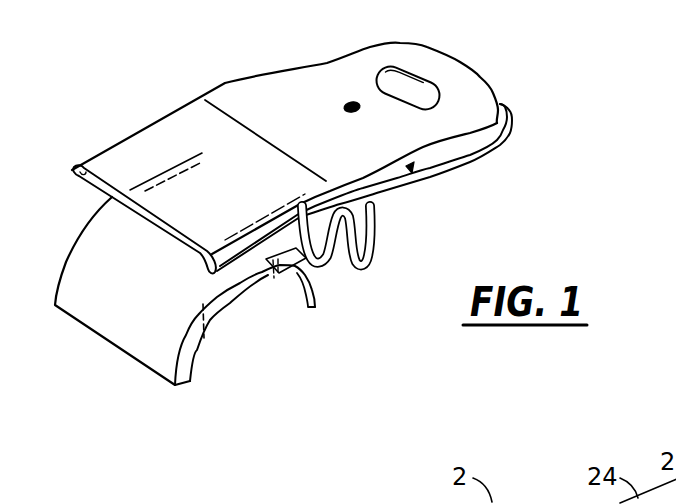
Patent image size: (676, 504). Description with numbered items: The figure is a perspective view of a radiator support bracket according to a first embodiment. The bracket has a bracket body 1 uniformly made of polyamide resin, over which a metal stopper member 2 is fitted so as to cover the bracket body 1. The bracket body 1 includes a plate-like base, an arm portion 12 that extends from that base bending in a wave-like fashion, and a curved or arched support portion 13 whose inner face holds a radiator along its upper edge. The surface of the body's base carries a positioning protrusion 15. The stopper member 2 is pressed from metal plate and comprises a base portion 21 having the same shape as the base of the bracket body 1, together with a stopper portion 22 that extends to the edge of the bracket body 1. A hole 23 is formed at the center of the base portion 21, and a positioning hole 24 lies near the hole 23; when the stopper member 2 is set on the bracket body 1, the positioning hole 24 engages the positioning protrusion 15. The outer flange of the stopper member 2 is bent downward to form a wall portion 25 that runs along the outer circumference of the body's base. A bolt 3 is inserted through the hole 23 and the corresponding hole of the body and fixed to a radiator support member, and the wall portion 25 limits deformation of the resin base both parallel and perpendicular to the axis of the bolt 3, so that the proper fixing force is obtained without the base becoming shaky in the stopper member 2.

The bracket body 1 is at (364, 249).
The stopper member 2 is at (222, 82).
The bolt 3 is at (340, 43).
The arm portion 12 is at (334, 252).
The curved support portion 13 is at (124, 333).
The positioning protrusion 15 is at (352, 102).
The base portion 21 is at (467, 78).
The stopper portion 22 is at (147, 133).
The hole 23 is at (404, 82).
The positioning hole 24 is at (357, 113).
The wall portion 25 is at (414, 162).